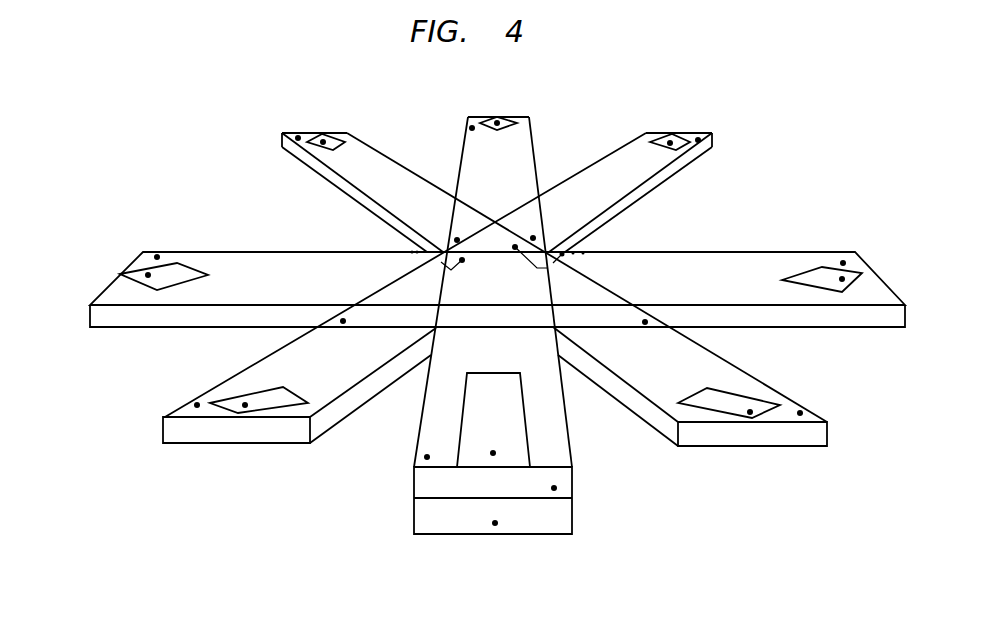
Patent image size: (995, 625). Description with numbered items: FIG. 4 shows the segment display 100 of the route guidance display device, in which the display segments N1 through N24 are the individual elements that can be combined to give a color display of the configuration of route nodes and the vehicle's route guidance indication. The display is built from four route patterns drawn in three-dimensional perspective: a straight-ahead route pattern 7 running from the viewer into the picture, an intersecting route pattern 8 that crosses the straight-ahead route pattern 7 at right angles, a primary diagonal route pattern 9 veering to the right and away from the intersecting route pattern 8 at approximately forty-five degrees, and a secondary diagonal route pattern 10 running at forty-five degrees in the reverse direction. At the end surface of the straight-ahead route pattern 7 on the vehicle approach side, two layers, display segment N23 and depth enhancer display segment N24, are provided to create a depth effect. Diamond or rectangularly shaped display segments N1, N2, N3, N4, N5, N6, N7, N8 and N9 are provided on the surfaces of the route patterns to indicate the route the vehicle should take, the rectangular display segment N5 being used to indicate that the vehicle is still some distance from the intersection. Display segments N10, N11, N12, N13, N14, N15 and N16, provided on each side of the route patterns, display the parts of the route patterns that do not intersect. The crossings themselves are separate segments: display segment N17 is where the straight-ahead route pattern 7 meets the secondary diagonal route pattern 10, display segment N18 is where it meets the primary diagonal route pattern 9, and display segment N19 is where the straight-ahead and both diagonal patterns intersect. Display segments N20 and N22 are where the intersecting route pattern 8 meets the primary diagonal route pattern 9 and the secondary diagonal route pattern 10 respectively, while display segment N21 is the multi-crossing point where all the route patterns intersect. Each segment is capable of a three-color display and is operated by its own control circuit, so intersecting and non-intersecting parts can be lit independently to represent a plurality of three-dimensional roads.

The sensor assembly 100 is at (546, 137).
The straight-ahead route pattern 7 is at (437, 407).
The intersecting route pattern 8 is at (757, 270).
The primary diagonal route pattern 9 is at (595, 178).
The secondary diagonal route pattern 10 is at (387, 160).
The display segment N1 is at (497, 123).
The display segment N2 is at (670, 143).
The display segment N3 is at (842, 279).
The display segment N4 is at (750, 412).
The rectangularly shaped display segment N5 is at (493, 453).
The display segment N6 is at (245, 405).
The display segment N7 is at (148, 275).
The display segment N8 is at (323, 142).
The display segment N9 is at (472, 128).
The display segment N10 is at (698, 140).
The display segment N11 is at (843, 263).
The display segment N12 is at (800, 413).
The display segment N13 is at (427, 457).
The display segment N14 is at (197, 405).
The display segment N15 is at (157, 257).
The display segment N16 is at (298, 138).
The display segment N17 is at (417, 252).
The display segment N18 is at (573, 253).
The display segment N19 is at (583, 253).
The display segment N20 is at (343, 321).
The display segment N21 is at (412, 252).
The display segment N22 is at (645, 322).
The display segment N23 is at (554, 488).
The depth enhancer display segment N24 is at (495, 523).